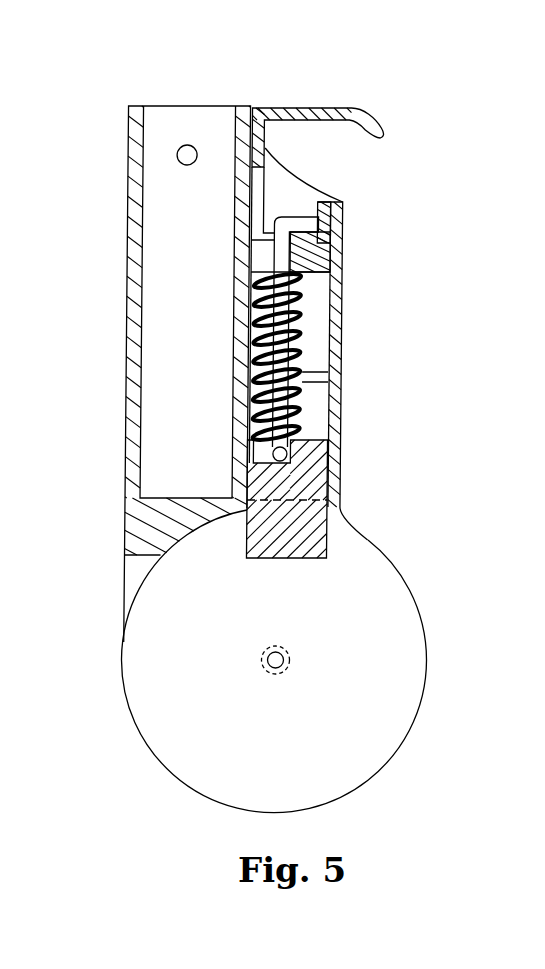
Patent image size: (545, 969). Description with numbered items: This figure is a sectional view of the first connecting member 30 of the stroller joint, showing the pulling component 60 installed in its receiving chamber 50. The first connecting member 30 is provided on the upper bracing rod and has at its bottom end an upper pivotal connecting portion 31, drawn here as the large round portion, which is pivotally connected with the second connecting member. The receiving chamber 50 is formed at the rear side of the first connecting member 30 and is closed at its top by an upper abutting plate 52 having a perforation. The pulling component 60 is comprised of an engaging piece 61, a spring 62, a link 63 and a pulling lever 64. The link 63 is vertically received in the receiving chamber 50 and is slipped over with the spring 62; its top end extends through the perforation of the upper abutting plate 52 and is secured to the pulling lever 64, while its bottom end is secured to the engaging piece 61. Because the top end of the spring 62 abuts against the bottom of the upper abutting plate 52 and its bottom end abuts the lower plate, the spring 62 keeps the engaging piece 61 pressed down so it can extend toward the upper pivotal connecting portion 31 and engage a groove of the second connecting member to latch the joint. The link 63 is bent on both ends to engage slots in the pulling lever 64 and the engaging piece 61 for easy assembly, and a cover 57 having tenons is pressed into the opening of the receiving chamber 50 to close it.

The first connecting member 30 is at (122, 442).
The upper pivotal connecting portion 31 is at (143, 693).
The receiving chamber 50 is at (320, 362).
The upper abutting plate 52 is at (340, 290).
The cover 57 is at (336, 434).
The pulling component 60 is at (272, 98).
The engaging piece 61 is at (318, 532).
The spring 62 is at (300, 393).
The link 63 is at (300, 224).
The pulling lever 64 is at (326, 118).